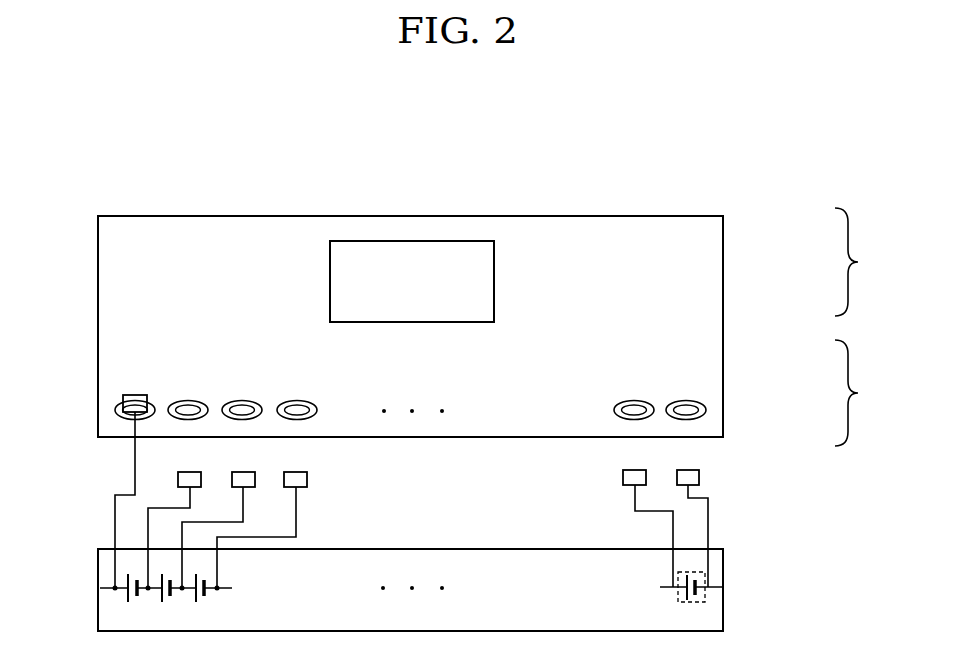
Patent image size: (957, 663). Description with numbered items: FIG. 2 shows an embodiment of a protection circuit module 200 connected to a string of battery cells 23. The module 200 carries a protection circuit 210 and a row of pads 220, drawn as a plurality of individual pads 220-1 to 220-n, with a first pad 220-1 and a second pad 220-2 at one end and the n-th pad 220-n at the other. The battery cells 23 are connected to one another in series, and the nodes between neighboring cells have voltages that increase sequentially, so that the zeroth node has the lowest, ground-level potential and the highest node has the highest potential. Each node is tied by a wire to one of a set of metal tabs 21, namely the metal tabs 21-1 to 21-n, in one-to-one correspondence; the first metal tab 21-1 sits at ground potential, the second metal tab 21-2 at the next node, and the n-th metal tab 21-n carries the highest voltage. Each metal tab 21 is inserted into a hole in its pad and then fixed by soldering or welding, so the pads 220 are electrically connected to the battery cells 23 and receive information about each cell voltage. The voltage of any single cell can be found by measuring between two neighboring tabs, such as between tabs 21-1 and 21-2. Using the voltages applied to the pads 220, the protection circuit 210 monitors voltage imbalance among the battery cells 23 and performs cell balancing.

The protection circuit module 200 is at (411, 216).
The protection circuit 210 is at (494, 268).
The pads 220 is at (835, 262).
The first pad 220-1 is at (686, 400).
The second pad 220-2 is at (627, 400).
The n-th pad 220-n is at (116, 411).
The metal tab 21 is at (838, 393).
The first metal tab 21-1 is at (700, 478).
The second metal tab 21-2 is at (623, 478).
The n-th metal tab 21-n is at (135, 395).
The battery cell 23 is at (705, 590).